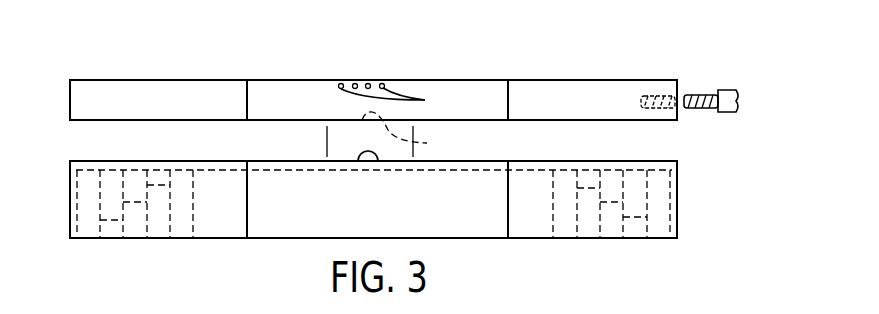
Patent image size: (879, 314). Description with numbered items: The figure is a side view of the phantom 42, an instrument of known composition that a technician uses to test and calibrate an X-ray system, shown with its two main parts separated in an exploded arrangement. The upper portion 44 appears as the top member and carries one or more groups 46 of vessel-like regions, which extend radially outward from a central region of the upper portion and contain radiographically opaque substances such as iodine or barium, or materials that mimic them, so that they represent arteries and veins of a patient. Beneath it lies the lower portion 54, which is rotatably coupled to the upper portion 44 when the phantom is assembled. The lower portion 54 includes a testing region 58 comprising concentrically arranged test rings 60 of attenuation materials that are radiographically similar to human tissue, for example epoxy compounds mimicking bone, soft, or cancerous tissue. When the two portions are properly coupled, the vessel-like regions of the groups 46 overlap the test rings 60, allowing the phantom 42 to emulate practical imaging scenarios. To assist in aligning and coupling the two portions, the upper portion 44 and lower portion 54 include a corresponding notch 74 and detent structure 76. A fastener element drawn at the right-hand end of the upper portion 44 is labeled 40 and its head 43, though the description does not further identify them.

The connector strip 40 is at (399, 102).
The phantom 42 is at (692, 91).
The screw head 43 is at (724, 112).
The upper portion 44 is at (520, 80).
The groups of vessel-like regions 46 is at (396, 77).
The lower portion 54 is at (520, 162).
The testing region 58 is at (672, 241).
The test rings 60 is at (90, 238).
The notch 74 is at (411, 134).
The detent structure 76 is at (360, 155).